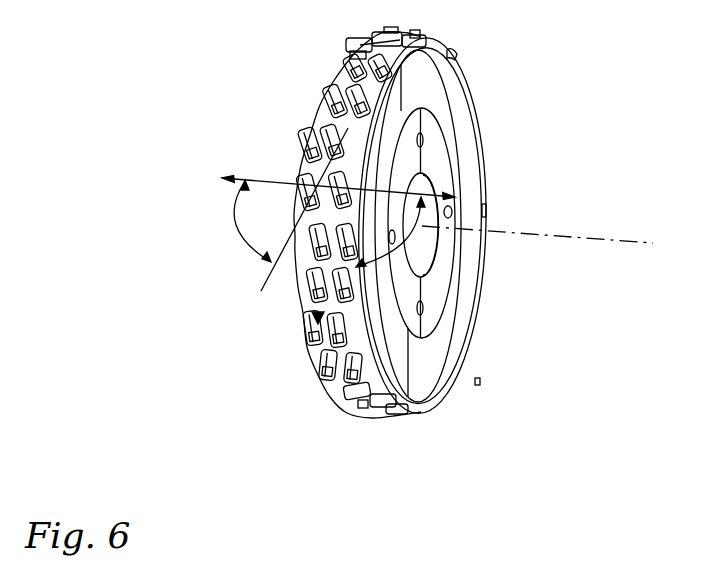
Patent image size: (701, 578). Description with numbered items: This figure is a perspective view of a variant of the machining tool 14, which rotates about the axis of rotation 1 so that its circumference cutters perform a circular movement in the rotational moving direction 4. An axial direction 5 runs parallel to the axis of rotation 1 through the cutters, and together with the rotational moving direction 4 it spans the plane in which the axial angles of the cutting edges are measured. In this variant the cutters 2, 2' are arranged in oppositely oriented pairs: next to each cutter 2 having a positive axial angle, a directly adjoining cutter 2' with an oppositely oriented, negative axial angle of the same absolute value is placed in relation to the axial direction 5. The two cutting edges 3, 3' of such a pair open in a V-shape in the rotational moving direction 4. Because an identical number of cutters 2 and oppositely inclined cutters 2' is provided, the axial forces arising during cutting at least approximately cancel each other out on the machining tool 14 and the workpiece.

The axis of rotation 1 is at (606, 238).
The cutter 2 is at (314, 153).
The cutter 2' is at (352, 145).
The cutting edge 3 is at (328, 236).
The cutting edge 3' is at (362, 134).
The rotational moving direction 4 is at (305, 302).
The axial direction 5 is at (263, 179).
The machining tool 14 is at (510, 345).